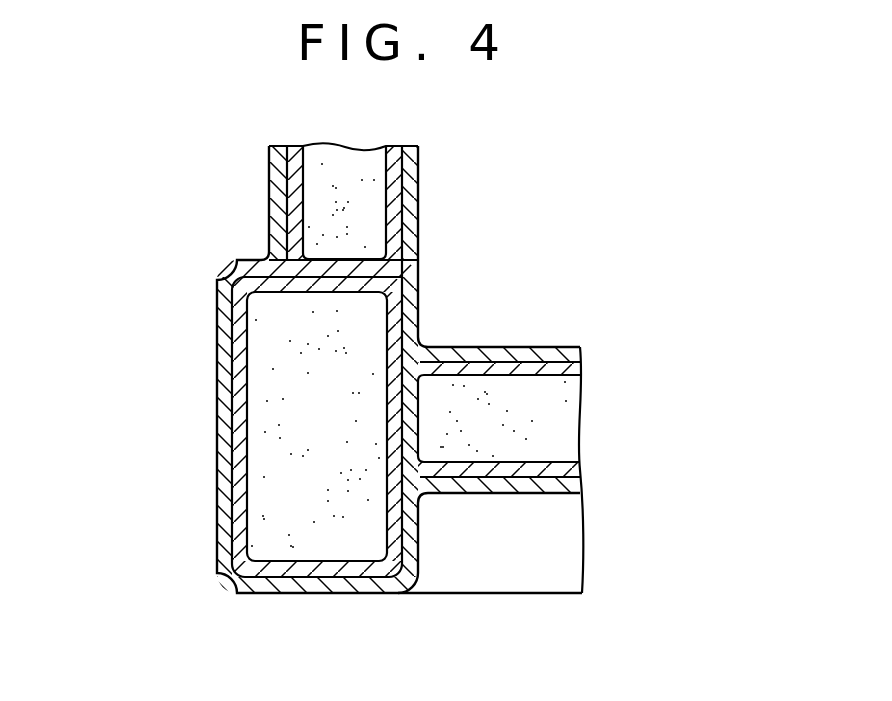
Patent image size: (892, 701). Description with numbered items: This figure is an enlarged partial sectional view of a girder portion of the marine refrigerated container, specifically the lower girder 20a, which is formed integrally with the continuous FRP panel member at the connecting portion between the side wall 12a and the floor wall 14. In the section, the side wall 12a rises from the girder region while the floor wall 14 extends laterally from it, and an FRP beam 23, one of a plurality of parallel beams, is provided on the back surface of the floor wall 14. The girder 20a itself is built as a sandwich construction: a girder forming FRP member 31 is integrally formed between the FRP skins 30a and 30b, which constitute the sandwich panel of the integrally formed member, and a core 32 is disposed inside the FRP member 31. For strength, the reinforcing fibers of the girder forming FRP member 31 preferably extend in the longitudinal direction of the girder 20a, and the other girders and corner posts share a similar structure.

The side wall 12a is at (347, 196).
The FRP skin 30a is at (277, 222).
The FRP skin 30b is at (420, 236).
The floor wall 14 is at (548, 338).
The FRP girder 20a is at (322, 369).
The core 32 is at (257, 490).
The girder forming FRP member 31 is at (238, 533).
The FRP beam 23 is at (502, 582).